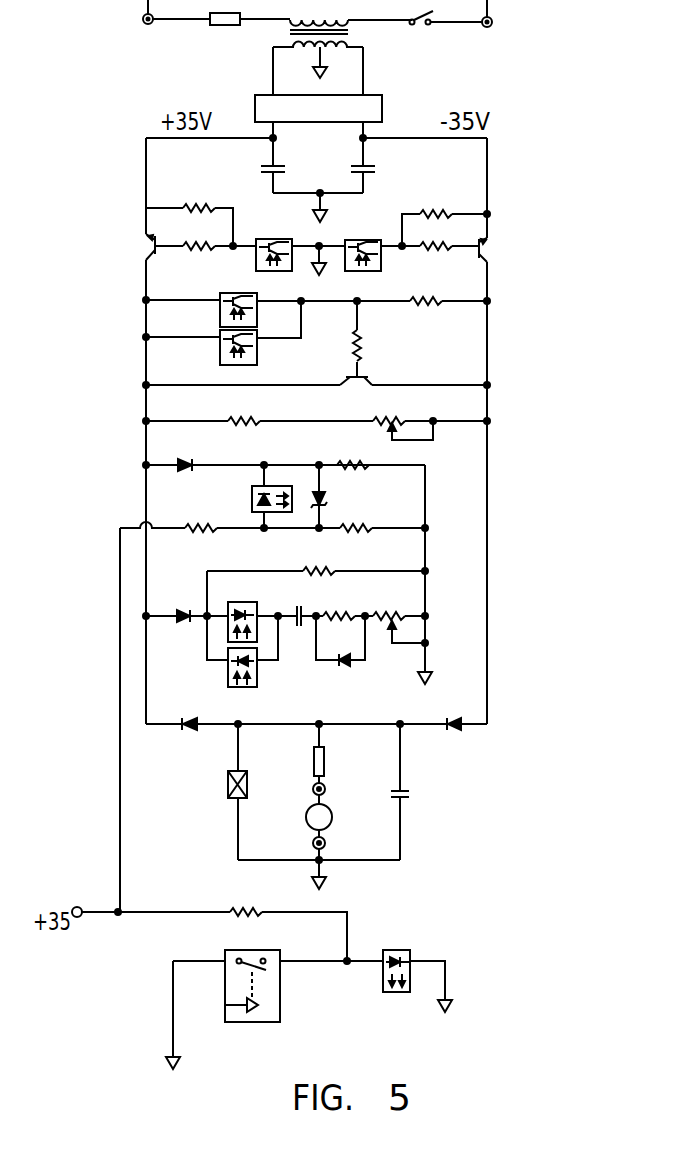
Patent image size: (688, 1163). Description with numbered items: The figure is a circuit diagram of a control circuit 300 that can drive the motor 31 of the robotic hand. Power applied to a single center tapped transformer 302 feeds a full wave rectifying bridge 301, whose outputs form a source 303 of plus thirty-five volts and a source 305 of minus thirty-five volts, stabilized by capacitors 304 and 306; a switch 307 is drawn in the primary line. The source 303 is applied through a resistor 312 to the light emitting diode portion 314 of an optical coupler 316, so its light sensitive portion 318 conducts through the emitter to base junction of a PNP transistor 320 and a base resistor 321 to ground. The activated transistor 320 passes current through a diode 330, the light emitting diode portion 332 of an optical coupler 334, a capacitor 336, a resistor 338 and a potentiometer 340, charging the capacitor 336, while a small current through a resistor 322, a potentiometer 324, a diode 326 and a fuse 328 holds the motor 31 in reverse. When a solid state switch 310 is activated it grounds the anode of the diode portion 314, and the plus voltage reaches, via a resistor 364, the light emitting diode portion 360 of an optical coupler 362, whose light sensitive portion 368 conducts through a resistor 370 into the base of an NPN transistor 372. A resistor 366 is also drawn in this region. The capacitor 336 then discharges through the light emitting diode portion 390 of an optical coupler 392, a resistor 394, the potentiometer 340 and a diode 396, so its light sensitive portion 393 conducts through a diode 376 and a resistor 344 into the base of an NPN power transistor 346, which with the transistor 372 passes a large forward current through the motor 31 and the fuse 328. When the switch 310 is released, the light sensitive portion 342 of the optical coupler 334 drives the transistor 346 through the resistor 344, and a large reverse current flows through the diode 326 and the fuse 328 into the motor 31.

The motor 31 is at (333, 816).
The control circuit 300 is at (511, 775).
The full wave rectifying bridge 301 is at (257, 112).
The center tapped transformer 302 is at (305, 48).
The source of +35 volts 303 is at (277, 123).
The capacitor 304 is at (260, 168).
The source of −35 volts 305 is at (364, 125).
The capacitor 306 is at (375, 172).
The power switch 307 is at (418, 28).
The solid state switch 310 is at (268, 1022).
The resistor 312 is at (258, 905).
The light emitting diode portion 314 is at (383, 973).
The optical coupler 316 is at (257, 270).
The light sensitive portion 318 is at (277, 239).
The PNP transistor 320 is at (150, 242).
The base resistor 321 is at (205, 252).
The resistor 322 is at (245, 418).
The potentiometer 324 is at (380, 426).
The diode 326 is at (452, 735).
The fuse 328 is at (325, 760).
The diode 330 is at (188, 621).
The light emitting diode portion 332 is at (228, 610).
The optical coupler 334 is at (264, 318).
The capacitor 336 is at (298, 606).
The resistor 338 is at (345, 602).
The potentiometer 340 is at (394, 610).
The light sensitive portion 342 is at (220, 320).
The resistor 344 is at (359, 333).
The NPN power transistor 346 is at (355, 388).
The light emitting diode portion 360 is at (252, 495).
The optical coupler 362 is at (371, 271).
The resistor 364 is at (205, 531).
The resistor 366 is at (370, 468).
The light sensitive portion 368 is at (378, 254).
The resistor 370 is at (445, 252).
The NPN transistor 372 is at (489, 249).
The diode 376 is at (183, 736).
The light emitting diode portion 390 is at (228, 664).
The optical coupler 392 is at (260, 349).
The light sensitive portion 393 is at (220, 356).
The resistor 394 is at (318, 568).
The diode 396 is at (339, 664).